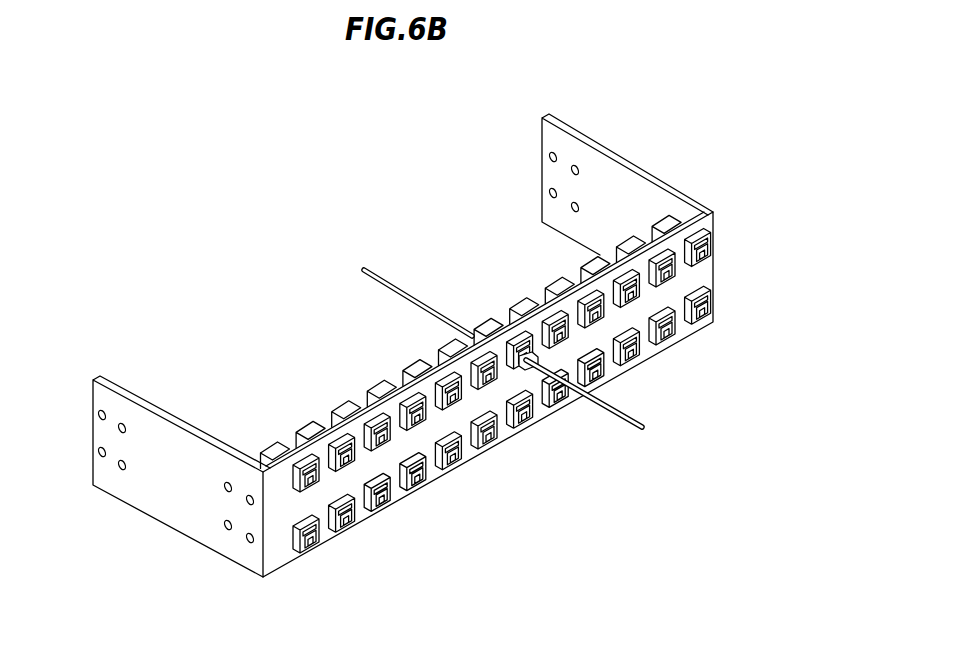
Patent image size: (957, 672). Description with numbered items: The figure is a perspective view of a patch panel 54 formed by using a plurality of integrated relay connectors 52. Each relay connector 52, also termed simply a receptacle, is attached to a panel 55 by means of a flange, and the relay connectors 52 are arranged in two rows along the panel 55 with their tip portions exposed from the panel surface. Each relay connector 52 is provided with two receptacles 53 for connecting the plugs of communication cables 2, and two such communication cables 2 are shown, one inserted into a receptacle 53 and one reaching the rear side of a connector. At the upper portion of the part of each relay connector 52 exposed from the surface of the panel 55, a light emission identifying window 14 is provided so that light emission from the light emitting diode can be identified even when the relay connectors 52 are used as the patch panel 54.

The communication cable 2 is at (387, 272).
The light emission identifying window 14 is at (715, 229).
The relay connector 52 is at (710, 273).
The receptacle 53 is at (714, 248).
The patch panel 54 is at (675, 119).
The panel 55 is at (291, 557).